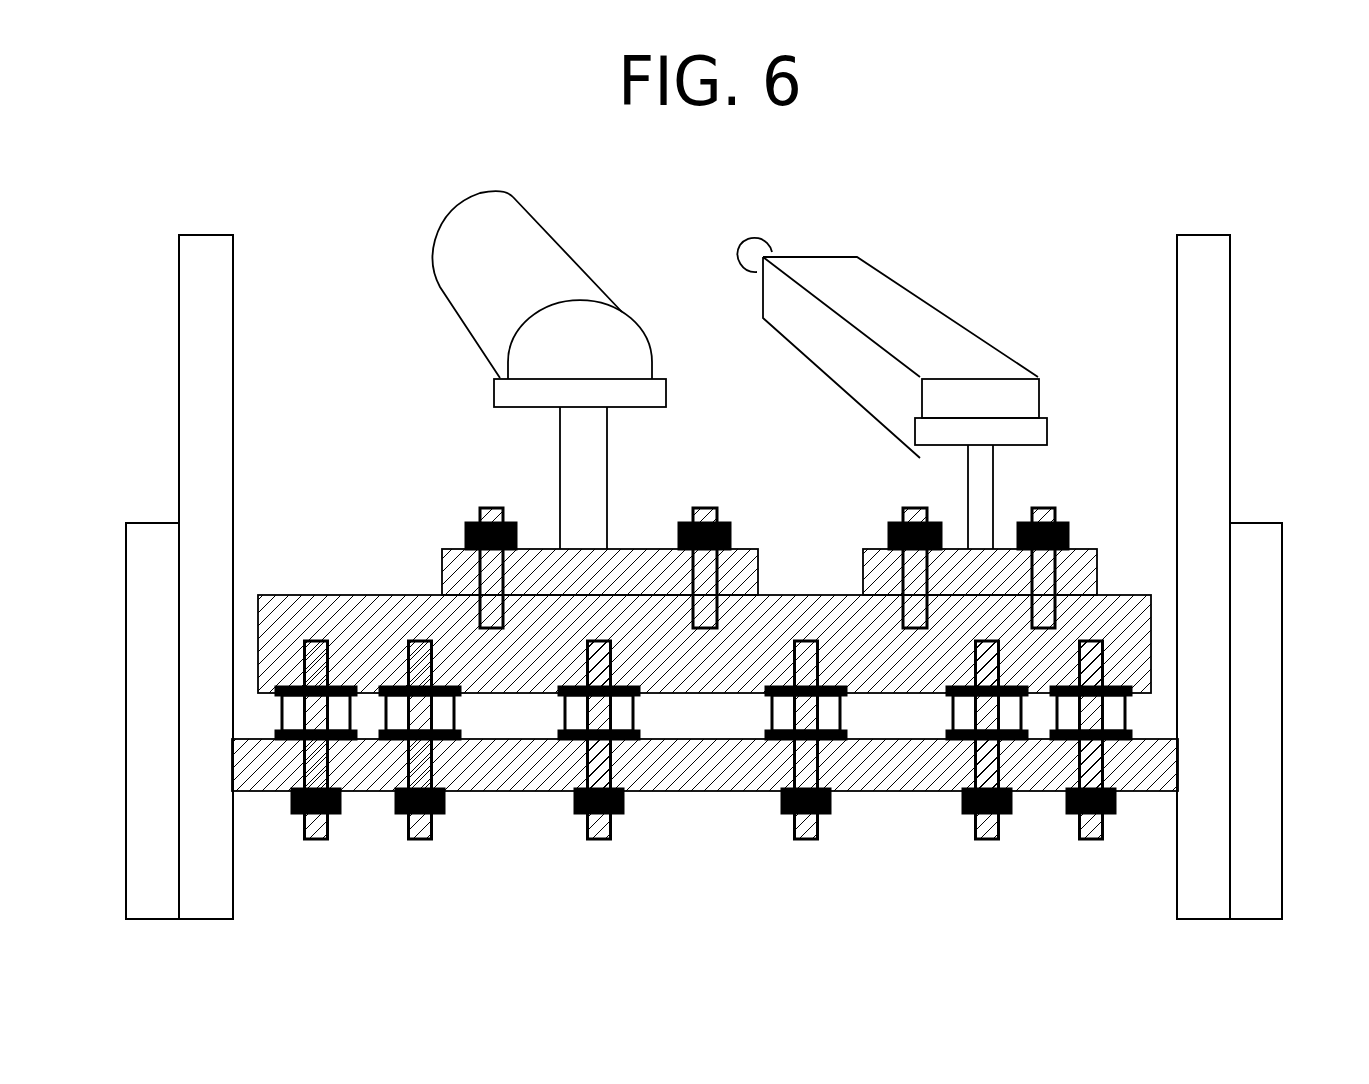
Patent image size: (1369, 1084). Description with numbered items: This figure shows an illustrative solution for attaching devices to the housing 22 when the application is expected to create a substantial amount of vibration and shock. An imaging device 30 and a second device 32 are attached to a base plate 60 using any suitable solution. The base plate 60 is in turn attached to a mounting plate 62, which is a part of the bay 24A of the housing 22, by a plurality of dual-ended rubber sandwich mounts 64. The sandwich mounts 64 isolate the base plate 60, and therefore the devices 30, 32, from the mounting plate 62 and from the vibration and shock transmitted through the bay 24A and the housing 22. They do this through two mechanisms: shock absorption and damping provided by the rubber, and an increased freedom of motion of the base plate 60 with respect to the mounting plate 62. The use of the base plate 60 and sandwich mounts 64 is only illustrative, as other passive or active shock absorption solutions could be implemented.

The housing 22 is at (126, 652).
The bay 24A is at (179, 356).
The imaging device 30 is at (523, 284).
The device 32 is at (914, 337).
The base plate 60 is at (360, 595).
The mounting plate 62 is at (723, 793).
The dual-ended rubber sandwich mounts 64 is at (773, 708).